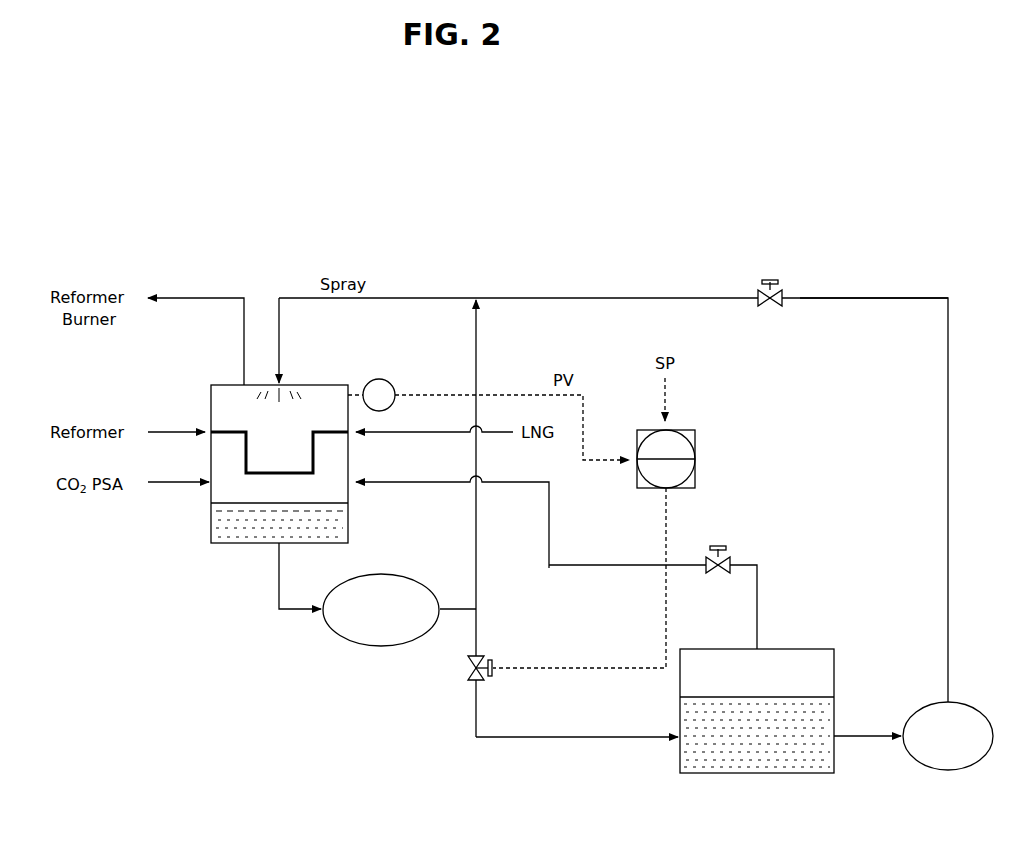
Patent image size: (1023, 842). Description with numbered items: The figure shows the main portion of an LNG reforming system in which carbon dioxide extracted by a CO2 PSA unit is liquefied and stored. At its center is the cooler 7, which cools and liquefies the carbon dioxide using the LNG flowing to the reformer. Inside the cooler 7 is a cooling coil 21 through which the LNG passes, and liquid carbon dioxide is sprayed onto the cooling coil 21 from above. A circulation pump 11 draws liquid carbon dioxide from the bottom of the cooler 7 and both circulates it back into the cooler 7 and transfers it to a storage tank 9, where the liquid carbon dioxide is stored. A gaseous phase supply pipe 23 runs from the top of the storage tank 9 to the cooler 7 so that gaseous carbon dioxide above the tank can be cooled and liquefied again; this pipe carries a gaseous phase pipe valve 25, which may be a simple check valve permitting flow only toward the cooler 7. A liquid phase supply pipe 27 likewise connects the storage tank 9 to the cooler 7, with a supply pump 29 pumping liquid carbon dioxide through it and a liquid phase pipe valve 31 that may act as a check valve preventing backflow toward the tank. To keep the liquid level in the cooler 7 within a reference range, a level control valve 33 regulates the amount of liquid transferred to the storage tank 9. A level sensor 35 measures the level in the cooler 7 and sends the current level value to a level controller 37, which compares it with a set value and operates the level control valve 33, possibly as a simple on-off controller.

The cooler 7 is at (232, 543).
The storage tank 9 is at (813, 648).
The circulation pump 11 is at (346, 640).
The cooling coil 21 is at (313, 450).
The gaseous phase supply pipe 23 is at (549, 518).
The gaseous phase pipe valve 25 is at (722, 545).
The liquid phase supply pipe 27 is at (836, 297).
The supply pump 29 is at (970, 702).
The liquid phase pipe valve 31 is at (773, 280).
The level control valve 33 is at (468, 662).
The level sensor 35 is at (382, 378).
The level controller 37 is at (687, 430).